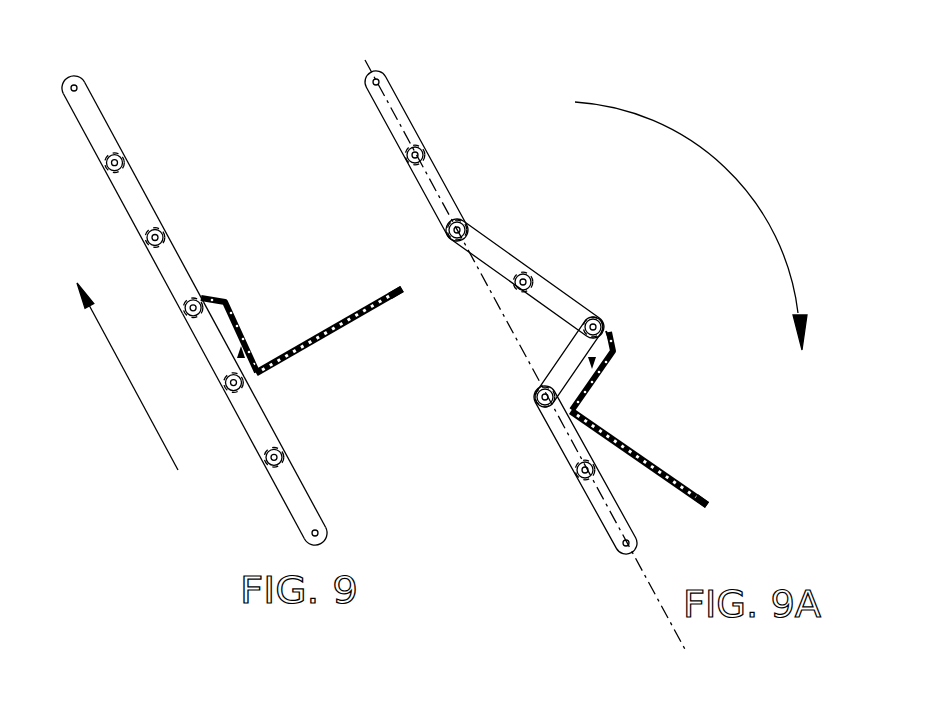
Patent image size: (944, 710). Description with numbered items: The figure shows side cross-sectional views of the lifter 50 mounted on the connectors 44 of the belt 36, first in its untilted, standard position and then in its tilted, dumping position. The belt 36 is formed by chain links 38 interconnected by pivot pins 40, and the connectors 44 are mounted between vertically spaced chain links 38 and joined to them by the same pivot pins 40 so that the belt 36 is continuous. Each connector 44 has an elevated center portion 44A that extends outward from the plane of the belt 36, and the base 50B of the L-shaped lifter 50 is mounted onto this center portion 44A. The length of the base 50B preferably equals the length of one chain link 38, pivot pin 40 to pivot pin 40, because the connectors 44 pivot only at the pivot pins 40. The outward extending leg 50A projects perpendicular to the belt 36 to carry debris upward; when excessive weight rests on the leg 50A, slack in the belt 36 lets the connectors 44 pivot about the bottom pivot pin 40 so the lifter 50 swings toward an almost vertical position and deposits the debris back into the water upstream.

In FIG. 9, the belt 36 is at (90, 120).
In FIG. 9A, the belt 36 is at (392, 105).
In FIG. 9, the chain links 38 is at (297, 498).
In FIG. 9A, the chain links 38 is at (492, 253).
In FIG. 9, the pivot pins 40 is at (195, 300).
In FIG. 9A, the pivot pins 40 is at (600, 322).
In FIG. 9, the connectors 44 is at (220, 343).
In FIG. 9A, the connectors 44 is at (568, 367).
In FIG. 9, the center portion 44A is at (247, 377).
In FIG. 9A, the center portion 44A is at (606, 331).
In FIG. 9, the lifter 50 is at (372, 258).
In FIG. 9A, the lifter 50 is at (657, 462).
In FIG. 9, the outward extending leg 50A is at (393, 250).
In FIG. 9A, the outward extending leg 50A is at (707, 492).
In FIG. 9, the base 50B is at (233, 317).
In FIG. 9A, the base 50B is at (605, 374).